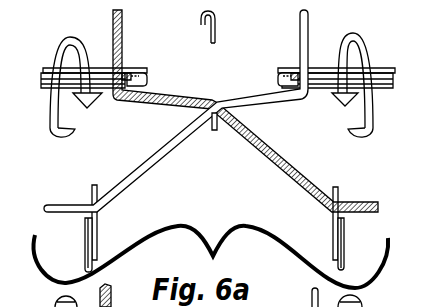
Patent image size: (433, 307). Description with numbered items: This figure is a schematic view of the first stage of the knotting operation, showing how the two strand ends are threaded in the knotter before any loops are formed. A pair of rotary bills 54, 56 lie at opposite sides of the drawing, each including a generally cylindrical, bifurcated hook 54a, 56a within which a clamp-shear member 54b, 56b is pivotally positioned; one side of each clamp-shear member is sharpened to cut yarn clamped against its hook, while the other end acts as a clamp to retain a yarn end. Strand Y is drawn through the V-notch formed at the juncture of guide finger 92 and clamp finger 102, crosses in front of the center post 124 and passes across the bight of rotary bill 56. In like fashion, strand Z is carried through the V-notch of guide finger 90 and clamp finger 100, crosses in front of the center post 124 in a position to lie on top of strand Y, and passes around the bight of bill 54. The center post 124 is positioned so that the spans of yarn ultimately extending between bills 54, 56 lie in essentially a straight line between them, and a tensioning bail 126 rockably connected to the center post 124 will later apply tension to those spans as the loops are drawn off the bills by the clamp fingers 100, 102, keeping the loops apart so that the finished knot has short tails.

The rotary bill 54 is at (323, 80).
The bifurcated hook 54a is at (278, 88).
The clamp-shear member 54b is at (297, 72).
The rotary bill 56 is at (103, 82).
The bifurcated hook 56a is at (148, 88).
The clamp-shear member 56b is at (124, 70).
The guide finger 90 is at (87, 230).
The guide finger 92 is at (344, 230).
The clamp finger 100 is at (103, 165).
The clamp finger 102 is at (333, 160).
The center post 124 is at (216, 16).
The tensioning bail 126 is at (206, 131).
The strand Y is at (299, 186).
The strand Z is at (156, 164).